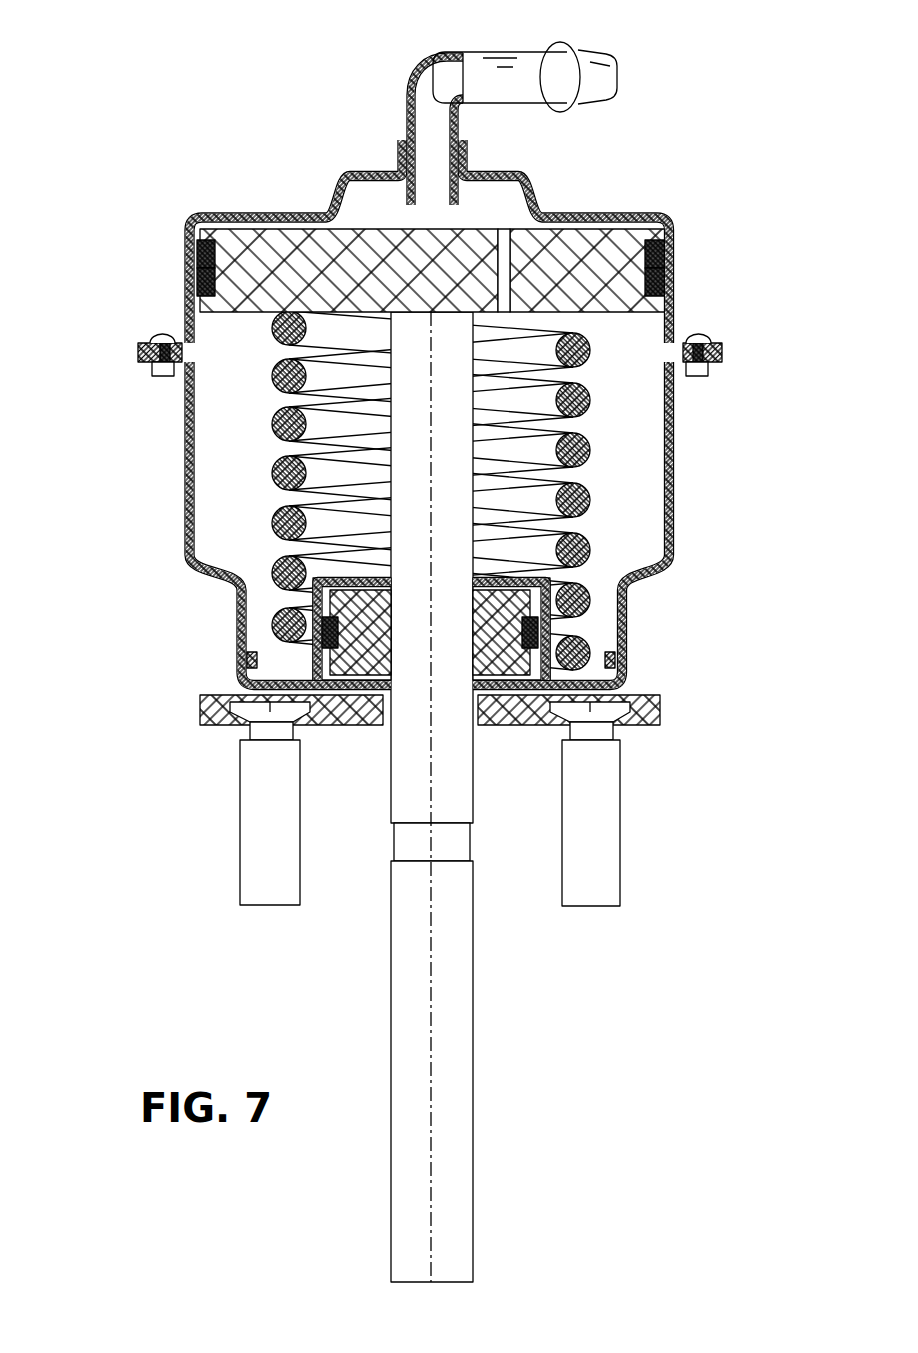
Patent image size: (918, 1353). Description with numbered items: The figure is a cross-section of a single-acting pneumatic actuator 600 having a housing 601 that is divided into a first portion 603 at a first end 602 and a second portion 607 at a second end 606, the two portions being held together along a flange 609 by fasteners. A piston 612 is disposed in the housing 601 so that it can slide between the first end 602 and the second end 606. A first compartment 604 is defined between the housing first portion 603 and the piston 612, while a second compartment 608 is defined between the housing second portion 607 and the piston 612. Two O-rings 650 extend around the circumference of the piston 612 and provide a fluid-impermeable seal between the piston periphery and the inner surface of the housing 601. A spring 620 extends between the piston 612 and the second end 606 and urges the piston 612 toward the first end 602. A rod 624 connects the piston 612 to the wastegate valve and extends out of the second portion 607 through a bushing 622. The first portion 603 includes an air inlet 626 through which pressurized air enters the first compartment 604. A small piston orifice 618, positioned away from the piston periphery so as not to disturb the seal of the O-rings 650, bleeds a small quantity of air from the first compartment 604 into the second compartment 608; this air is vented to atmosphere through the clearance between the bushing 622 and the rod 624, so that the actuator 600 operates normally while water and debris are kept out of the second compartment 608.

The pneumatic actuator 600 is at (766, 131).
The housing 601 is at (742, 249).
The first end 602 is at (628, 213).
The first portion 603 is at (677, 307).
The first compartment 604 is at (366, 200).
The second end 606 is at (613, 692).
The second portion 607 is at (677, 413).
The second compartment 608 is at (625, 525).
The flange 609 is at (138, 356).
The piston 612 is at (270, 252).
The piston orifice 618 is at (504, 230).
The spring 620 is at (258, 525).
The bushing 622 is at (503, 656).
The rod 624 is at (457, 1010).
The air inlet 626 is at (498, 65).
The O-rings 650 is at (196, 246).